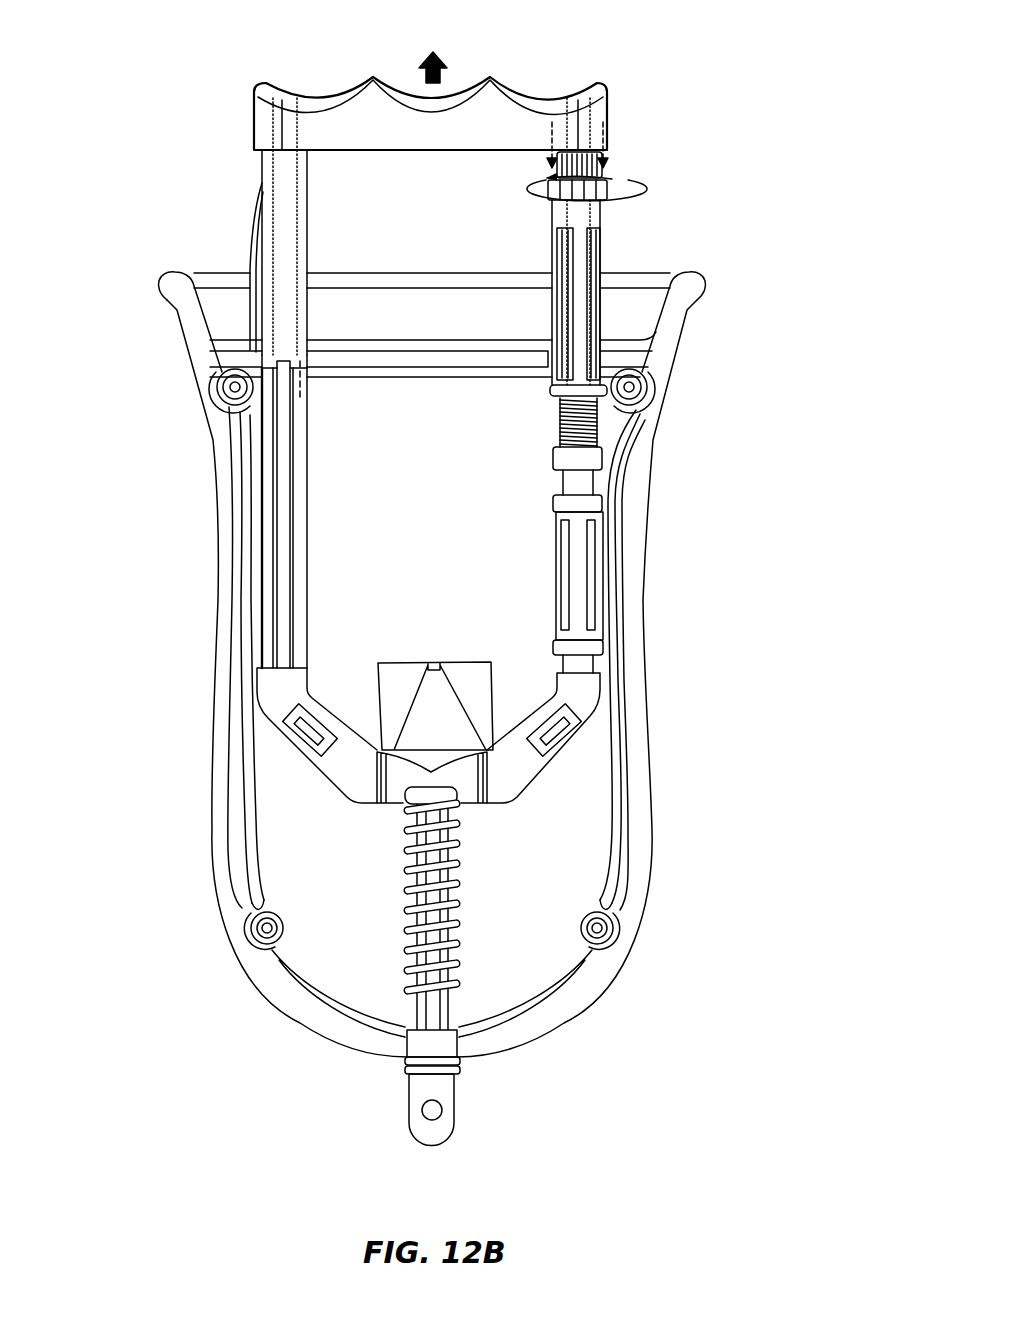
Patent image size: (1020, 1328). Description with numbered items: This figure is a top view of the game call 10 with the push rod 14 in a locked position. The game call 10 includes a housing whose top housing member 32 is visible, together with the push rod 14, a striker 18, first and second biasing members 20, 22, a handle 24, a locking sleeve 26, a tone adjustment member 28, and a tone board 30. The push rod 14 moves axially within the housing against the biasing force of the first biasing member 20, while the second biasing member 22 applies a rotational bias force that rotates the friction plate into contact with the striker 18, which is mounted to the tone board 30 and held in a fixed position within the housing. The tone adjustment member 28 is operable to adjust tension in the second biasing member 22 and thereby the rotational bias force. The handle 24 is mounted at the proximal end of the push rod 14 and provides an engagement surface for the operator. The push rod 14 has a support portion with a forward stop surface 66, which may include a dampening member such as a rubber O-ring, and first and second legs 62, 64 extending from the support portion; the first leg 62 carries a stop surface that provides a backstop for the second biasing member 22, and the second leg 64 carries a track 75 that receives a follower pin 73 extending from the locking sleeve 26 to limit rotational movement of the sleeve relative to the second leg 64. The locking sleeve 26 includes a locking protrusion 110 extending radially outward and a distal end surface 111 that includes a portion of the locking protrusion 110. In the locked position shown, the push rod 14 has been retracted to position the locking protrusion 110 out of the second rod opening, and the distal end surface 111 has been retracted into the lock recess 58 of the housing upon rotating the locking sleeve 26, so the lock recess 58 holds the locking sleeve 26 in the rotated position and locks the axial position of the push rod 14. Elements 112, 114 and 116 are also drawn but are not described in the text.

The game call 10 is at (638, 76).
The push rod 14 is at (404, 1123).
The striker 18 is at (482, 653).
The first biasing member 20 is at (460, 903).
The second biasing member 22 is at (603, 427).
The handle 24 is at (508, 83).
The locking sleeve 26 is at (308, 235).
The tone adjustment member 28 is at (604, 257).
The tone board 30 is at (582, 813).
The top housing member 32 is at (657, 837).
The lock recess 58 is at (245, 370).
The first leg 62 is at (602, 567).
The second leg 64 is at (263, 587).
The forward stop surface 66 is at (461, 1057).
The follower pin 73 is at (300, 397).
The track 75 is at (303, 358).
The locking protrusion 110 is at (250, 265).
The distal end surface 111 is at (235, 387).
The cross bar 112 is at (604, 360).
The knurled collar 114 is at (584, 160).
The adjustment nut 116 is at (608, 192).